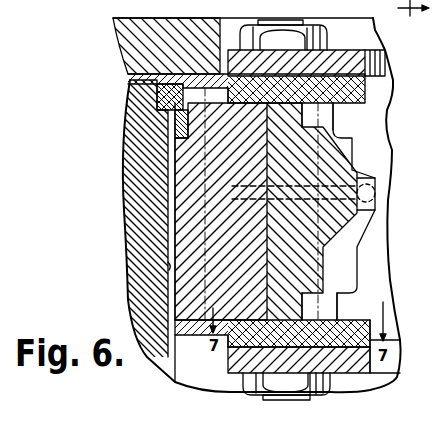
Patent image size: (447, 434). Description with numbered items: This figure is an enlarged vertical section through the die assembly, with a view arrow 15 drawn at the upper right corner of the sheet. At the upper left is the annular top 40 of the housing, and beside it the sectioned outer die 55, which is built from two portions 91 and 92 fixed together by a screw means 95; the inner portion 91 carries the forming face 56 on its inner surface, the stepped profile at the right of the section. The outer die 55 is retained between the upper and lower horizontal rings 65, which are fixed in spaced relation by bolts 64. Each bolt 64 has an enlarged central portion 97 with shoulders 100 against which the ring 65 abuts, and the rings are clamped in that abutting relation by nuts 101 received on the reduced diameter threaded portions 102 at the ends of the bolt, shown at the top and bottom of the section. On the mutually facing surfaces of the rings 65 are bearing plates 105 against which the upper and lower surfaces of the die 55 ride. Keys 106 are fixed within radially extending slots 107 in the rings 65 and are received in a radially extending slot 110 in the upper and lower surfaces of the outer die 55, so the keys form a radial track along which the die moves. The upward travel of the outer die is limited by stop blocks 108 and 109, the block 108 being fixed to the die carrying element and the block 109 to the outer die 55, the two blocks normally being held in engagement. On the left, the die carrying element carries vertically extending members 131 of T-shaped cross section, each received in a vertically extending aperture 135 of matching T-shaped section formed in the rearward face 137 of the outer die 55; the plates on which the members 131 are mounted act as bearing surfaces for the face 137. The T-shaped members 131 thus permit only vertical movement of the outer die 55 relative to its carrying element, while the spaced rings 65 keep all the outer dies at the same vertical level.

The view direction arrow 15 is at (422, 9).
The annular top 40 is at (125, 48).
The outer die 55 is at (380, 212).
The forming face 56 is at (357, 236).
The bolt 64 is at (336, 30).
The horizontal ring 65 is at (386, 61).
The portion of outer die 91 is at (283, 262).
The portion of outer die 92 is at (218, 260).
The screw means 95 is at (302, 214).
The enlarged central portion 97 is at (250, 148).
The shoulder 100 is at (314, 70).
The nut 101 is at (273, 45).
The reduced diameter threaded portion 102 is at (277, 20).
The bearing plate 105 is at (366, 95).
The key 106 is at (350, 105).
The radially extending slot 107 is at (271, 378).
The stop block 108 is at (158, 97).
The stop block 109 is at (177, 125).
The radially extending slot 110 is at (215, 96).
The vertically extending member 131 is at (167, 240).
The vertically extending aperture 135 is at (167, 160).
The face 137 is at (168, 268).